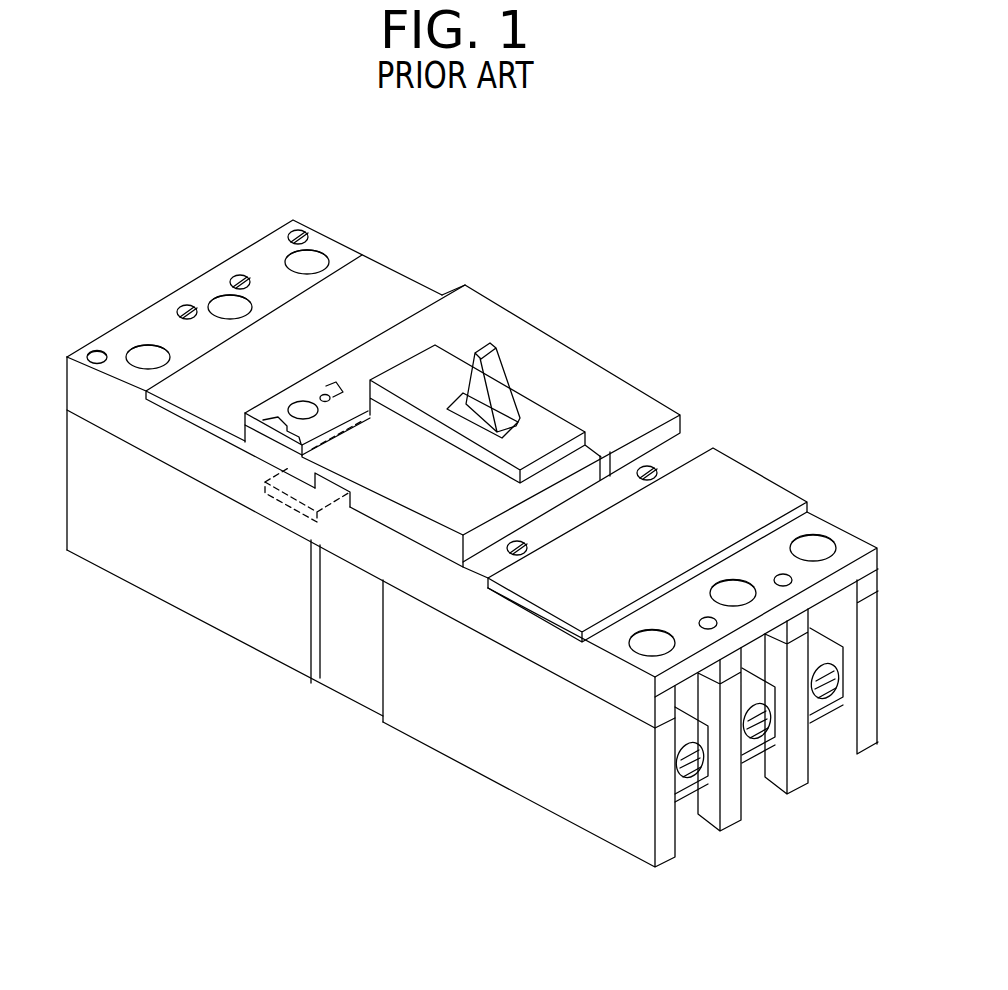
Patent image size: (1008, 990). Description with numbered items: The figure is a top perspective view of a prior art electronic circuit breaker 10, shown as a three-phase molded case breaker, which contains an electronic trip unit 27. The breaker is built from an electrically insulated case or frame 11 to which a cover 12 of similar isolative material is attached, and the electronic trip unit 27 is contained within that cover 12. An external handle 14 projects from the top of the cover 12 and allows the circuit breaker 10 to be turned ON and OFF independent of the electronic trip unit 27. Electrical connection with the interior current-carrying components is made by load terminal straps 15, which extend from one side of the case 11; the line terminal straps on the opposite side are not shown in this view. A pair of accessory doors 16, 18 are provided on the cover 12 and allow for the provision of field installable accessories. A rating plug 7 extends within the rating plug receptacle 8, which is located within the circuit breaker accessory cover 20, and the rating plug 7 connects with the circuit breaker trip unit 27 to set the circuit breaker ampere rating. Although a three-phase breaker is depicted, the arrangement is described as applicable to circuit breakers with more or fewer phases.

The rating plug 7 is at (289, 398).
The rating plug receptacle 8 is at (343, 394).
The circuit breaker 10 is at (685, 977).
The case 11 is at (469, 768).
The cover 12 is at (496, 643).
The external handle 14 is at (492, 374).
The load terminal straps 15 is at (820, 722).
The accessory door 16 is at (606, 418).
The accessory door 18 is at (455, 501).
The accessory cover 20 is at (700, 452).
The electronic trip unit 27 is at (275, 492).